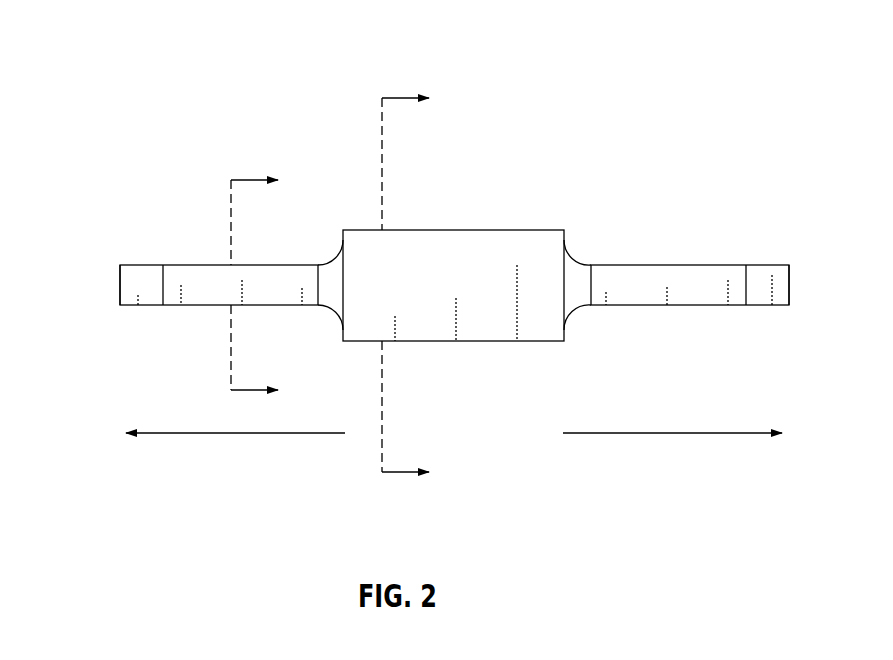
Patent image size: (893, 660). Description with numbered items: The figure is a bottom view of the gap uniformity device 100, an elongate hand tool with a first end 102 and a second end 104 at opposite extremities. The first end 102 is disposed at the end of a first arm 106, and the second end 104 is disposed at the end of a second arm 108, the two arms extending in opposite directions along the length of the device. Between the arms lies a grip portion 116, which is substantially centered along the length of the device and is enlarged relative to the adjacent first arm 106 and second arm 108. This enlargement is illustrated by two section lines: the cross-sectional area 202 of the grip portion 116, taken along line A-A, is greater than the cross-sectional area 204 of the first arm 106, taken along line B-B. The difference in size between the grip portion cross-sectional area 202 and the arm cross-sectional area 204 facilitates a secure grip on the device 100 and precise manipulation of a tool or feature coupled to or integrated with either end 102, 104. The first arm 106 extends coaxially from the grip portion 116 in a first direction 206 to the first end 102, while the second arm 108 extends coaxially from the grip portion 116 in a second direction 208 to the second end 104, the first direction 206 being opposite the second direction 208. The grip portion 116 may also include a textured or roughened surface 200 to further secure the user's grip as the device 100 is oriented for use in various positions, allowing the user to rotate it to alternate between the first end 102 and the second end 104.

The gap uniformity device 100 is at (450, 213).
The first end 102 is at (120, 288).
The second end 104 is at (789, 288).
The first arm 106 is at (184, 274).
The second arm 108 is at (675, 278).
The grip portion 116 is at (472, 246).
The textured or roughened surface 200 is at (532, 343).
The cross-sectional area of the grip portion 202 is at (382, 148).
The cross-sectional area of the first arm 204 is at (231, 200).
The first direction 206 is at (237, 434).
The second direction 208 is at (658, 434).